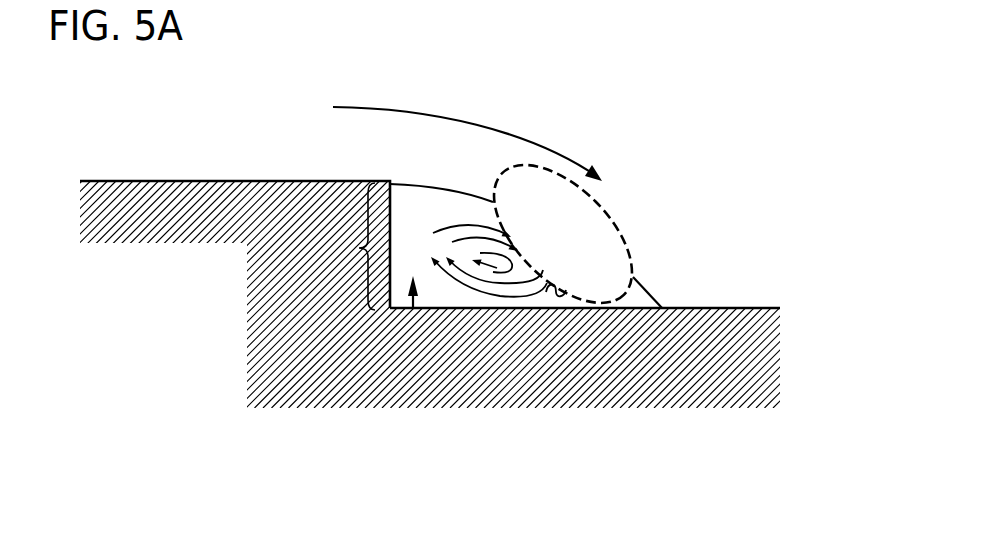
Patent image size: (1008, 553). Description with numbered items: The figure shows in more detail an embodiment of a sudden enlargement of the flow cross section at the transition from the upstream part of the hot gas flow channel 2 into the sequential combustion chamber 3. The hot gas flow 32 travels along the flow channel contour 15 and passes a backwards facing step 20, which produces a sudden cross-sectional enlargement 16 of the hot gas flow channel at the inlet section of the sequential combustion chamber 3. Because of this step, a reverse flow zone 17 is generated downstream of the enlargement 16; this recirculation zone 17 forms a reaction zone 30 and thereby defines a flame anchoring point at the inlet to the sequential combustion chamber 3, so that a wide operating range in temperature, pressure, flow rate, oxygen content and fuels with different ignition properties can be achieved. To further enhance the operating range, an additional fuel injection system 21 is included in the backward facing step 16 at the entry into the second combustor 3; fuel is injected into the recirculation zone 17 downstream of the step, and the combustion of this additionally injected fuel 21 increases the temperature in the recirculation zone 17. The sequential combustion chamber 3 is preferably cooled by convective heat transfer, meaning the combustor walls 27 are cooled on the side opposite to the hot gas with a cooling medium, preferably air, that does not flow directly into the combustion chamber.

The first combustion zone / upstream section 2 is at (203, 136).
The sequential combustion chamber 3 is at (676, 167).
The flow channel contour 15 is at (237, 183).
The sudden cross-sectional enlargement 16 is at (351, 246).
The reverse flow zone 17 is at (493, 268).
The backwards facing step 20 is at (413, 230).
The fuel injection system 21 is at (411, 316).
The combustor walls 27 is at (697, 308).
The reaction zone 30 is at (598, 298).
The hot gas flow 32 is at (462, 118).